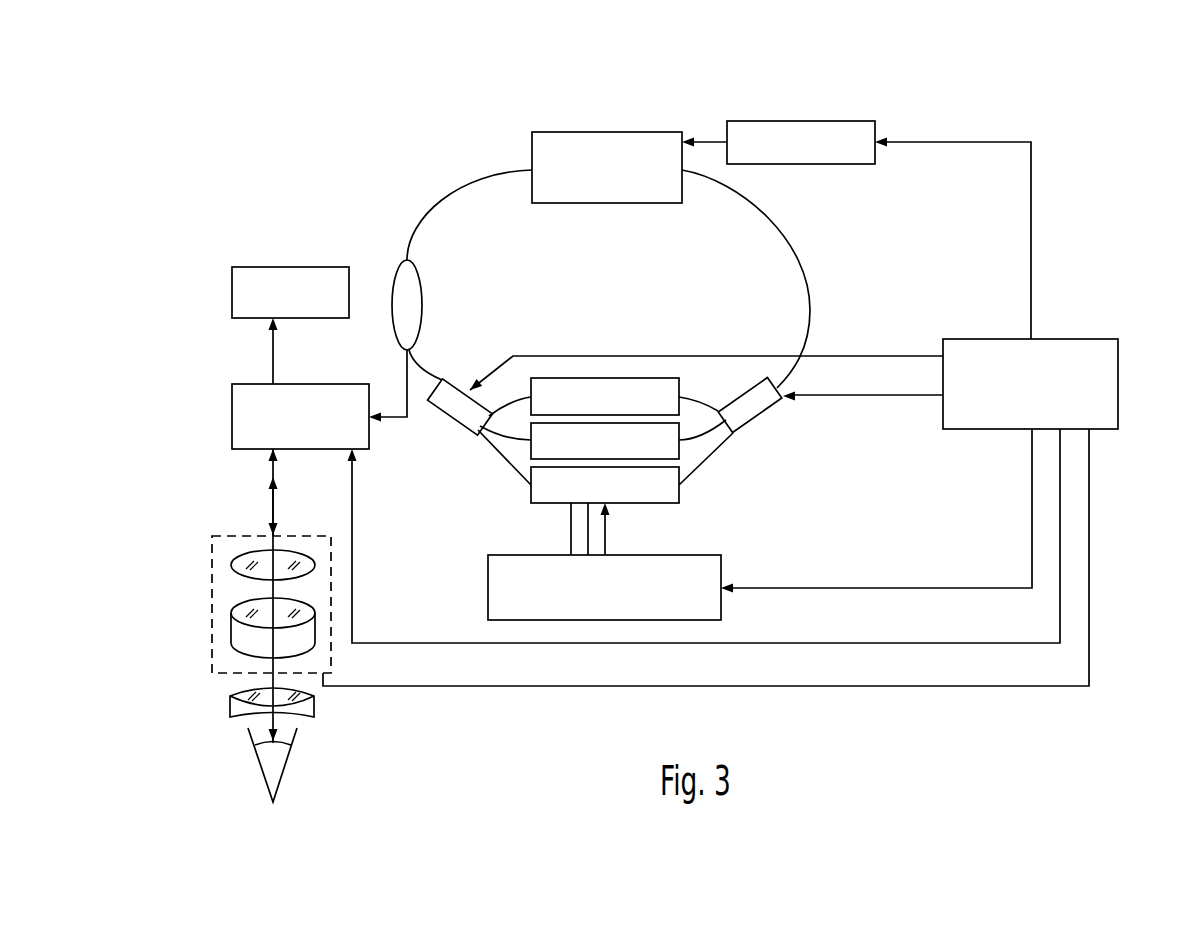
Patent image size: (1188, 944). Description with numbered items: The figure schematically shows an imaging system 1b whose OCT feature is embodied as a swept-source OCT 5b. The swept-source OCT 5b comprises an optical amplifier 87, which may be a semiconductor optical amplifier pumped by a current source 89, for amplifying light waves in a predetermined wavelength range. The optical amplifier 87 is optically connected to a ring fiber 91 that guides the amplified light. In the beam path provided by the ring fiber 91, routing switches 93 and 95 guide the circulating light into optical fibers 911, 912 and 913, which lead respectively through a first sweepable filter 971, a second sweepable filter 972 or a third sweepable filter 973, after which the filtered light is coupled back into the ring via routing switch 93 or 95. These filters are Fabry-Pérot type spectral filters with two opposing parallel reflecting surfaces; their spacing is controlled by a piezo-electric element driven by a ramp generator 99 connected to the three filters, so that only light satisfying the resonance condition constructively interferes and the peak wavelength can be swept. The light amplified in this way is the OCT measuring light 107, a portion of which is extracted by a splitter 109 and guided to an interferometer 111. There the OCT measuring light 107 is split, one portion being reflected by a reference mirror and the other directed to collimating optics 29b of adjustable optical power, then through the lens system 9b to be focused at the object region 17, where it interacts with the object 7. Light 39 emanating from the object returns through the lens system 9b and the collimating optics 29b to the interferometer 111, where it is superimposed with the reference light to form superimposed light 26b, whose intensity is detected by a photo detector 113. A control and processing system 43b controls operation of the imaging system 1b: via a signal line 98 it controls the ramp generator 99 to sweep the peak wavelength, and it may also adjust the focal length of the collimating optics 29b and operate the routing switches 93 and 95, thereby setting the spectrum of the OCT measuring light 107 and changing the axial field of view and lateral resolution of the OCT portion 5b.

The imaging system 1b is at (1142, 122).
The swept-source OCT 5b is at (300, 137).
The object 7 is at (258, 765).
The lens system 9b is at (230, 706).
The object region 17 is at (318, 733).
The superimposed light 26b is at (273, 357).
The collimating optics 29b is at (212, 578).
The light emanating from the object 39 is at (270, 480).
The control and processing system 43b is at (1077, 339).
The optical amplifier 87 is at (606, 132).
The current source 89 is at (838, 164).
The ring fiber 91 is at (810, 287).
The optical fiber 911 is at (700, 405).
The optical fiber 912 is at (706, 440).
The optical fiber 913 is at (692, 473).
The routing switch 93 is at (762, 420).
The routing switch 95 is at (448, 415).
The first sweepable filter 971 is at (613, 410).
The second sweepable filter 972 is at (613, 450).
The third sweepable filter 973 is at (613, 493).
The signal line 98 is at (883, 588).
The ramp generator 99 is at (614, 600).
The OCT measuring light 107 is at (405, 372).
The splitter 109 is at (423, 302).
The interferometer 111 is at (232, 415).
The photo detector 113 is at (232, 292).